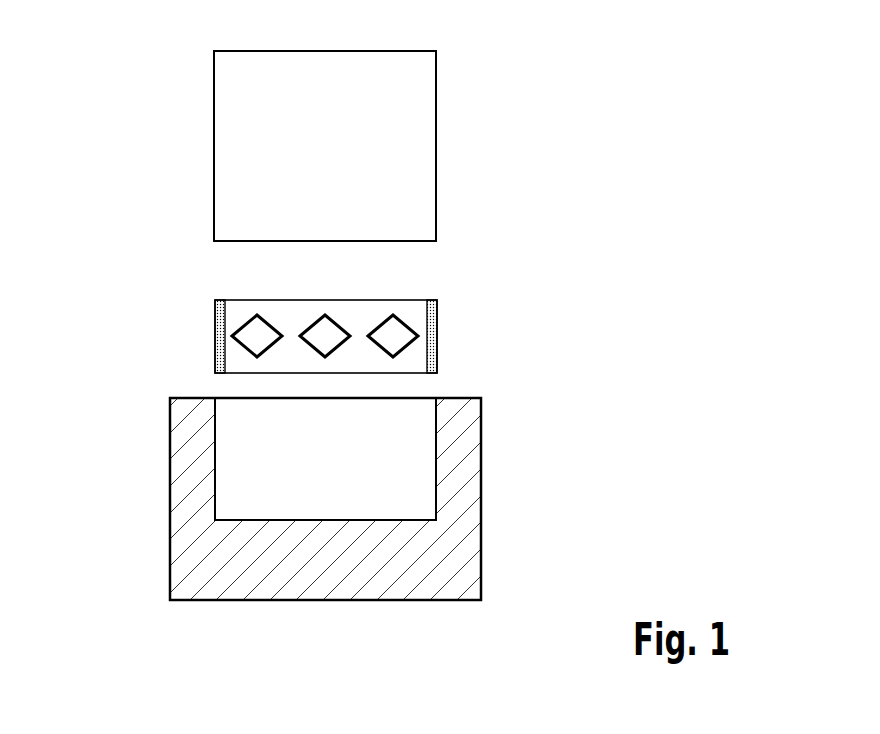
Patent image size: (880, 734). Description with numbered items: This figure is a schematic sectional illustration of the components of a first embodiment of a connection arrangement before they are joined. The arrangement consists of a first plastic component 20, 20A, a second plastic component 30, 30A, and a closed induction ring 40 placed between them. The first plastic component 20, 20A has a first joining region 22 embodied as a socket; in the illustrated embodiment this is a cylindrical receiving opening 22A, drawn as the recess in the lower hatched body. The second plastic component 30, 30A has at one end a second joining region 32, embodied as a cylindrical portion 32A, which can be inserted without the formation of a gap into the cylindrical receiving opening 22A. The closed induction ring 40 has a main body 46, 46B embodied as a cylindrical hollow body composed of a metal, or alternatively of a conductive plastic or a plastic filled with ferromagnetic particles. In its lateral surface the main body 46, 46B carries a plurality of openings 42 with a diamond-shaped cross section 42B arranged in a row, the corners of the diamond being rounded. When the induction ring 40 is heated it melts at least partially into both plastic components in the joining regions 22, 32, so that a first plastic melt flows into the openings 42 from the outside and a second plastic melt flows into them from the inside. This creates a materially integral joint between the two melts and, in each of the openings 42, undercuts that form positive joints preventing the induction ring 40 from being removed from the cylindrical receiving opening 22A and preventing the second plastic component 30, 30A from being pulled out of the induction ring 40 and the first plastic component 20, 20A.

The first plastic component 20 is at (342, 499).
The first plastic component 20A is at (342, 499).
The first joining region 22 is at (234, 459).
The cylindrical receiving opening 22A is at (233, 492).
The second plastic component 30 is at (402, 146).
The second plastic component 30A is at (423, 133).
The second joining region 32 is at (513, 146).
The cylindrical portion 32A is at (436, 203).
The closed induction ring 40 is at (305, 311).
The openings 42 is at (238, 303).
The diamond-shaped cross section 42B is at (243, 329).
The main body 46 is at (247, 329).
The edge strips (variant) 46B is at (213, 333).